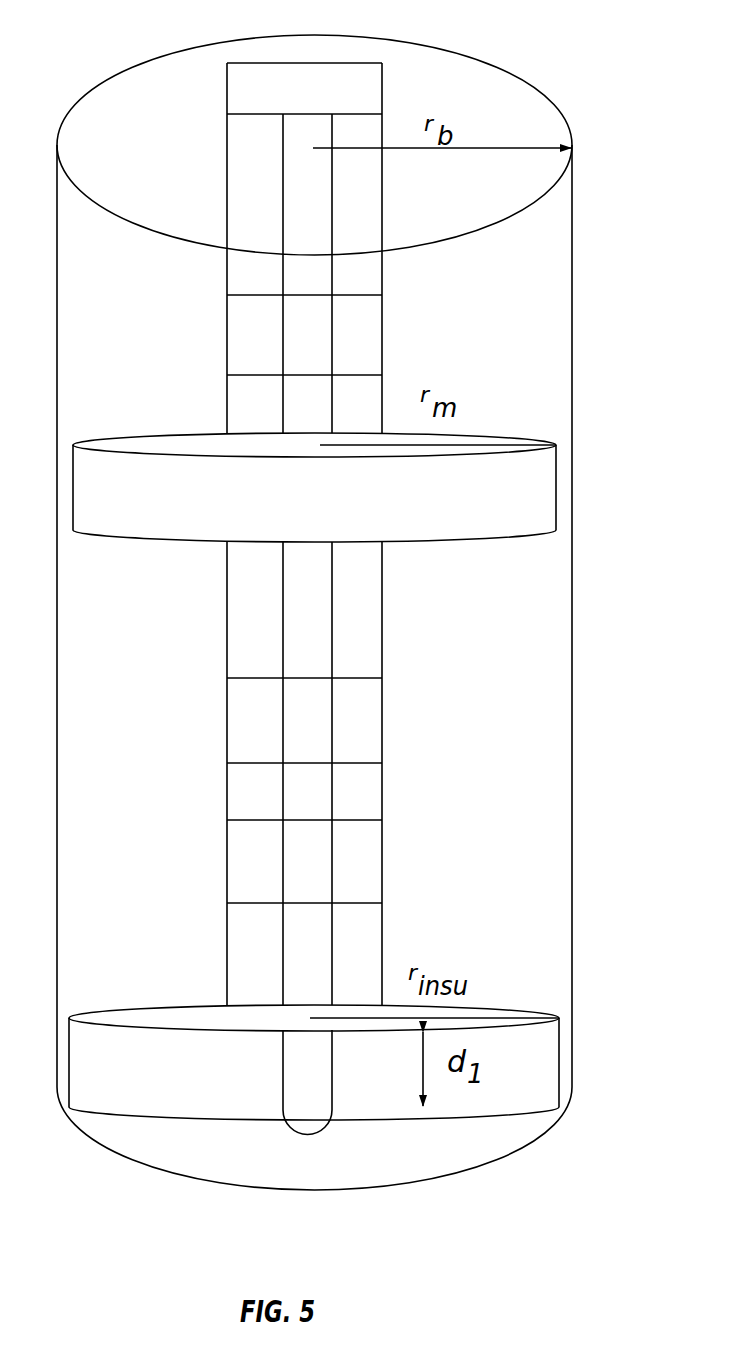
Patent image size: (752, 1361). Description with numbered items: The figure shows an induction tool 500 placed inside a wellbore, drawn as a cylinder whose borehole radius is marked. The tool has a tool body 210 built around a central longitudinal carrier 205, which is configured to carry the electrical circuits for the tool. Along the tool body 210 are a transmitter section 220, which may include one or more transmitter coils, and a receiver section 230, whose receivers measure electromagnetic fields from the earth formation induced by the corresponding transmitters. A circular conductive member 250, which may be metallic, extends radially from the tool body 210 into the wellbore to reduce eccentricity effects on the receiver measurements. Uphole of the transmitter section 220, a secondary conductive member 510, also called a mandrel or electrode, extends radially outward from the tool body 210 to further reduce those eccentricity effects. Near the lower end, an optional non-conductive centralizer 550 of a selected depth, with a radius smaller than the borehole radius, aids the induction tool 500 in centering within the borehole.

The induction tool 500 is at (435, 320).
The secondary conductive member 510 is at (238, 92).
The central longitudinal carrier 205 is at (332, 623).
The tool body 210 is at (201, 594).
The transmitter section 220 is at (175, 355).
The receiver section 230 is at (480, 783).
The conductive member 250 is at (556, 494).
The non-conductive centralizer 550 is at (559, 1060).